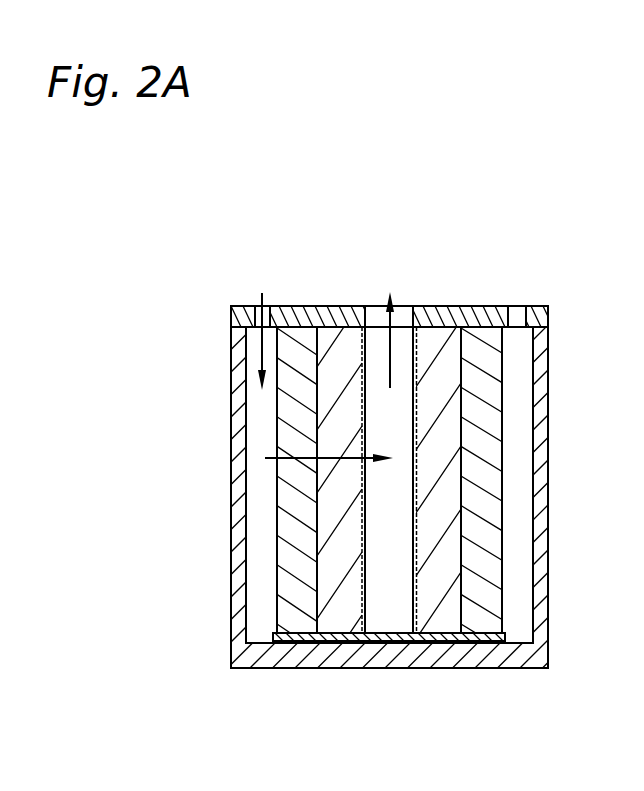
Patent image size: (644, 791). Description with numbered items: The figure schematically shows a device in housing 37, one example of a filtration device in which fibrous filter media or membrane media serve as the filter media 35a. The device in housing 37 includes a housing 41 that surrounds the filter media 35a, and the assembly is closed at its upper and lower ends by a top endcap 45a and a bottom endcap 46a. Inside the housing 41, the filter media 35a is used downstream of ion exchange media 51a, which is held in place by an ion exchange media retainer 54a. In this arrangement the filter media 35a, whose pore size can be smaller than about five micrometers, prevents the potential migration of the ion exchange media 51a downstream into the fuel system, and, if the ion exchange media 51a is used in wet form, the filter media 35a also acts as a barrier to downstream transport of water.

The device in housing 37 is at (215, 242).
The housing 41 is at (230, 409).
The top endcap 45a is at (478, 307).
The bottom endcap 46a is at (350, 636).
The filter media 35a is at (293, 518).
The ion exchange media 51a is at (332, 567).
The ion exchange media retainer 54a is at (367, 537).